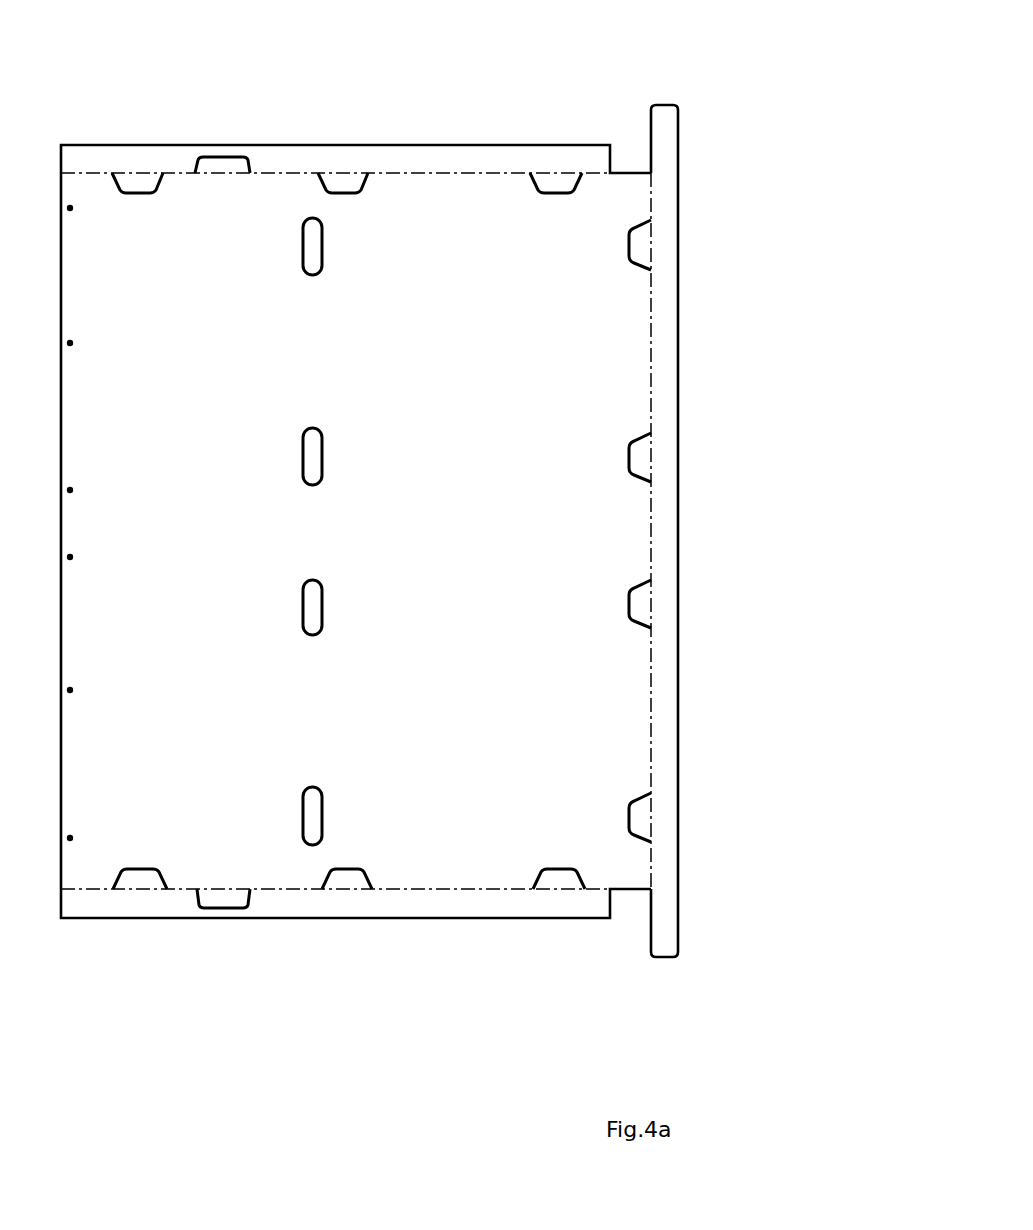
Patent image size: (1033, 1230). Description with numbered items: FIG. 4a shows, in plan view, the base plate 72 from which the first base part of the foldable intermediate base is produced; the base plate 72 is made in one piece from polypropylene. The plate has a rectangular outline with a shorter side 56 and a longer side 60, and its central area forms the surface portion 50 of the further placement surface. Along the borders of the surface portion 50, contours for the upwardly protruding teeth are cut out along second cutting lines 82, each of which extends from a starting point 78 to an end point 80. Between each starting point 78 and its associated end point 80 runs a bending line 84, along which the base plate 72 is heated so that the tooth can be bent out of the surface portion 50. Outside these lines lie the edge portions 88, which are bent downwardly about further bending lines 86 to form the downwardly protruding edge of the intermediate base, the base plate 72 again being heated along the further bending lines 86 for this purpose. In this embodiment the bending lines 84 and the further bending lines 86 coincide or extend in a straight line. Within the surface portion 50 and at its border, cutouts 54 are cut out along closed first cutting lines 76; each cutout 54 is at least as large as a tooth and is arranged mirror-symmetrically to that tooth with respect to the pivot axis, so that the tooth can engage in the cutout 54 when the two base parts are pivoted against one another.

The surface portion 50 is at (425, 505).
The cutout 54 is at (238, 160).
The shorter side 56 is at (428, 890).
The longer side 60 is at (652, 387).
The base plate 72 is at (565, 92).
The first cutting line 76 is at (222, 168).
The starting point 78 is at (112, 178).
The end point 80 is at (165, 178).
The second cutting line 82 is at (137, 195).
The bending line 84 is at (140, 172).
The further bending line 86 is at (425, 170).
The edge portion 88 is at (88, 166).